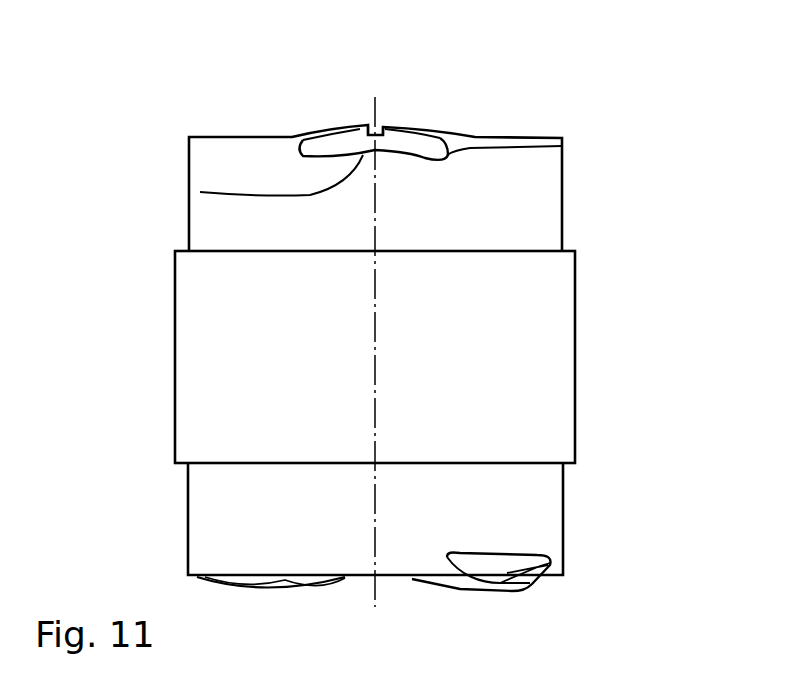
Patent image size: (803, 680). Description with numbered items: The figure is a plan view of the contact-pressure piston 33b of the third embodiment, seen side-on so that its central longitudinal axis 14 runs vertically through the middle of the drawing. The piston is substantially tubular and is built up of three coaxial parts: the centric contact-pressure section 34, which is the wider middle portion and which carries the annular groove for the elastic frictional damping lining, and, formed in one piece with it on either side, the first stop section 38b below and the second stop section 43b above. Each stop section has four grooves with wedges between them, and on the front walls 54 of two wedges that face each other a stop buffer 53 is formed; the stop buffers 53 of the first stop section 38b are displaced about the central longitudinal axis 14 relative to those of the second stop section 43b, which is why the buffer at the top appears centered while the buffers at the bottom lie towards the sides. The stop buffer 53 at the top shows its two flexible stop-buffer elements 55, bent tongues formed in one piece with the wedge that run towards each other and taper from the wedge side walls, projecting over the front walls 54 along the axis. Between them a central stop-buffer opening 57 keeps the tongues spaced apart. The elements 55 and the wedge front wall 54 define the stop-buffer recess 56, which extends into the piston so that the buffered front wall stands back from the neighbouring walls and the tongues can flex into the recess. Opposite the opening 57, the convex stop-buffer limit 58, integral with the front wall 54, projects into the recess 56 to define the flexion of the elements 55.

The central longitudinal axis 14 is at (373, 272).
The contact-pressure piston 33b is at (152, 359).
The contact-pressure section 34 is at (547, 367).
The first stop section 38b is at (545, 512).
The second stop section 43b is at (545, 218).
The stop buffer 53 is at (415, 100).
The front wall 54 is at (563, 147).
The stop-buffer element 55 is at (345, 124).
The stop-buffer recess 56 is at (320, 151).
The stop-buffer opening 57 is at (369, 120).
The stop-buffer limit 58 is at (200, 192).